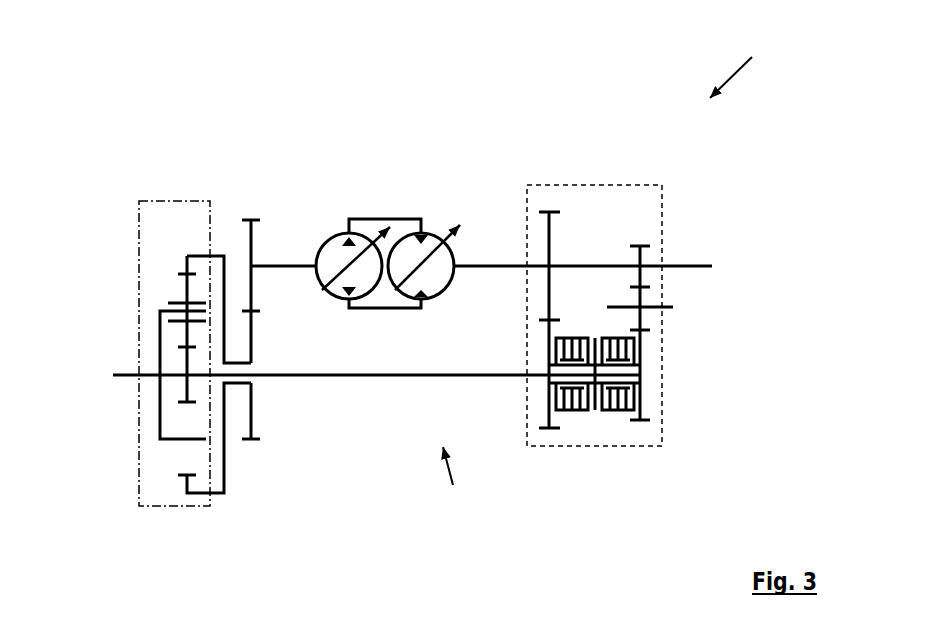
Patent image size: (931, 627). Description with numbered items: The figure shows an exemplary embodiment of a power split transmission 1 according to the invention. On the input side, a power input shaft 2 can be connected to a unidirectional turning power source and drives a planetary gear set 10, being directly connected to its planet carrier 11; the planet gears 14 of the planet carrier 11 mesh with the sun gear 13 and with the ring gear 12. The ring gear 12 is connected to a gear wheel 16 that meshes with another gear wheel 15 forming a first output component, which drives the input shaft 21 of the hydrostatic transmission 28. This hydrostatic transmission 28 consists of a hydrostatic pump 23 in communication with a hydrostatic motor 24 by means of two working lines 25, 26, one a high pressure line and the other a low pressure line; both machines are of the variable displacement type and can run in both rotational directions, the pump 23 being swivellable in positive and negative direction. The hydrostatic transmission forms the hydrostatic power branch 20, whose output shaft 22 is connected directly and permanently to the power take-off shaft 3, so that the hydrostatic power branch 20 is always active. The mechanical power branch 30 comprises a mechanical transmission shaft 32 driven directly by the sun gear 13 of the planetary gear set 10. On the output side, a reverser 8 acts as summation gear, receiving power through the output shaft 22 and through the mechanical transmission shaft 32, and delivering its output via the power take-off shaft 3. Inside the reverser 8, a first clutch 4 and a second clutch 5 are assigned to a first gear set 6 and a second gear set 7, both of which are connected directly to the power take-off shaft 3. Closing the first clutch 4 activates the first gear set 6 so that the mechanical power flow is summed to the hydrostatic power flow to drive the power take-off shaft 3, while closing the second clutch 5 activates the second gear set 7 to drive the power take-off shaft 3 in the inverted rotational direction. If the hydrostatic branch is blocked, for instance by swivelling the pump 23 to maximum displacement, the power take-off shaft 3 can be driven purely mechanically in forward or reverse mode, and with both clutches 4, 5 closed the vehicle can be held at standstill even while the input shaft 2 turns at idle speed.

The power split transmission 1 is at (745, 66).
The power input shaft 2 is at (358, 399).
The power take-off shaft 3 is at (496, 285).
The first clutch 4 is at (570, 407).
The second clutch 5 is at (618, 408).
The first gear set 6 is at (568, 200).
The second gear set 7 is at (657, 232).
The reverser 8 is at (643, 185).
The planetary gear set 10 is at (138, 200).
The planet carrier 11 is at (158, 432).
The ring gear 12 is at (192, 492).
The sun gear 13 is at (187, 388).
The planet gears 14 is at (187, 286).
The gear wheel 15 is at (251, 246).
The gear wheel 16 is at (251, 417).
The hydrostatic power branch 20 is at (381, 229).
The input shaft 21 is at (285, 270).
The output shaft 22 is at (497, 268).
The hydrostatic pump 23 is at (332, 237).
The hydrostatic motor 24 is at (435, 230).
The working line 25 is at (382, 218).
The working line 26 is at (395, 310).
The hydrostatic transmission 28 is at (381, 256).
The mechanical power branch 30 is at (459, 485).
The mechanical transmission shaft 32 is at (362, 375).